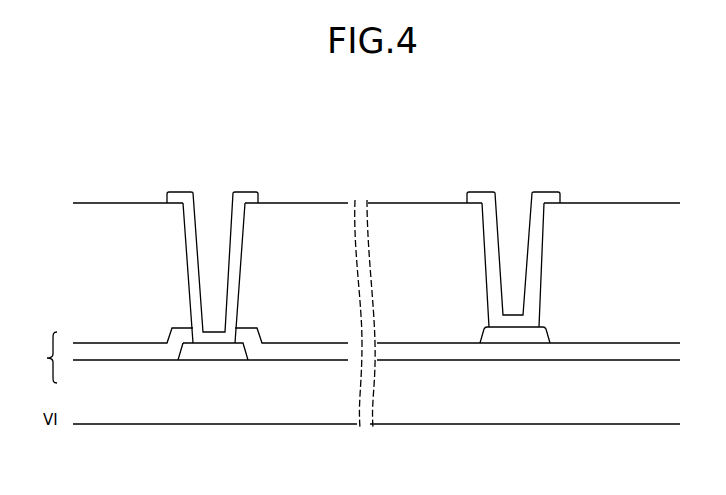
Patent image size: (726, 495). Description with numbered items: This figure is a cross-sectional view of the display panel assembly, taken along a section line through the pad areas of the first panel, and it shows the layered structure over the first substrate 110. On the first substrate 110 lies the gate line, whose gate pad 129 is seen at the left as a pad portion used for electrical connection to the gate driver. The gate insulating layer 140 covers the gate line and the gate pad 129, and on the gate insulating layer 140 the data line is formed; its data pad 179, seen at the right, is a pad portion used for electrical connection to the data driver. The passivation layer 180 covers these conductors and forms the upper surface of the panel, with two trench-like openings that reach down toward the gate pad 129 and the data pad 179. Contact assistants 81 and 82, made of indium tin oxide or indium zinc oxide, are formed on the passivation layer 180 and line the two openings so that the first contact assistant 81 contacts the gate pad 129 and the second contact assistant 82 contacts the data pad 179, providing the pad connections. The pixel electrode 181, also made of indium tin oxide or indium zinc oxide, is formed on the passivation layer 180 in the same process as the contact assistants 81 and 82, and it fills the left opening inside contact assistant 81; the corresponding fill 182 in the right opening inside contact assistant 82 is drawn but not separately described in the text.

The contact assistant 81 is at (179, 195).
The contact assistant 82 is at (481, 195).
The pixel electrode 181 is at (238, 246).
The second connecting member 182 is at (540, 247).
The first substrate 110 is at (587, 395).
The gate pad 129 is at (213, 350).
The gate insulating layer 140 is at (126, 350).
The data pad 179 is at (515, 335).
The passivation layer 180 is at (307, 283).